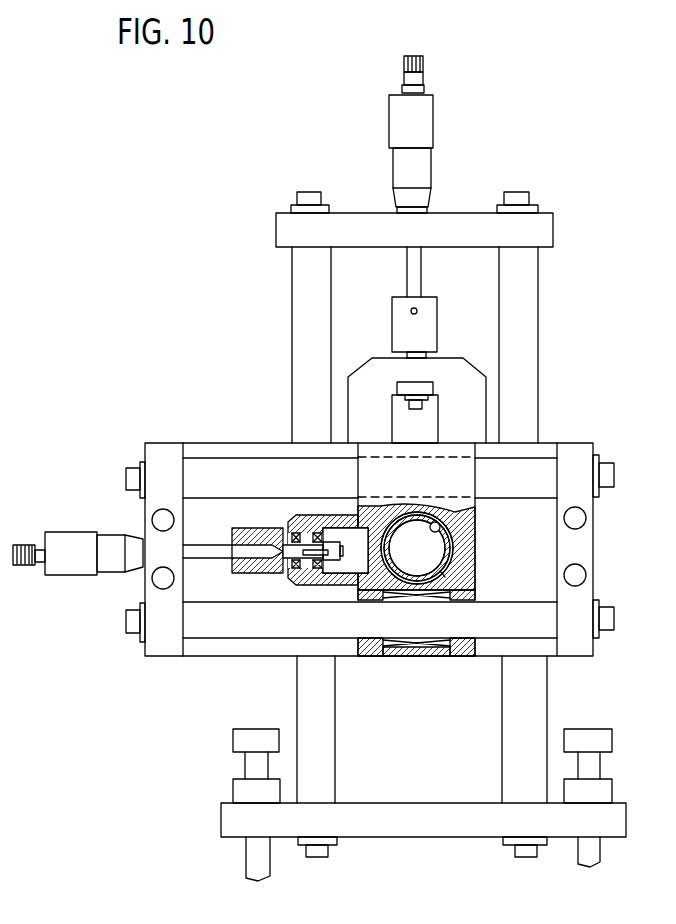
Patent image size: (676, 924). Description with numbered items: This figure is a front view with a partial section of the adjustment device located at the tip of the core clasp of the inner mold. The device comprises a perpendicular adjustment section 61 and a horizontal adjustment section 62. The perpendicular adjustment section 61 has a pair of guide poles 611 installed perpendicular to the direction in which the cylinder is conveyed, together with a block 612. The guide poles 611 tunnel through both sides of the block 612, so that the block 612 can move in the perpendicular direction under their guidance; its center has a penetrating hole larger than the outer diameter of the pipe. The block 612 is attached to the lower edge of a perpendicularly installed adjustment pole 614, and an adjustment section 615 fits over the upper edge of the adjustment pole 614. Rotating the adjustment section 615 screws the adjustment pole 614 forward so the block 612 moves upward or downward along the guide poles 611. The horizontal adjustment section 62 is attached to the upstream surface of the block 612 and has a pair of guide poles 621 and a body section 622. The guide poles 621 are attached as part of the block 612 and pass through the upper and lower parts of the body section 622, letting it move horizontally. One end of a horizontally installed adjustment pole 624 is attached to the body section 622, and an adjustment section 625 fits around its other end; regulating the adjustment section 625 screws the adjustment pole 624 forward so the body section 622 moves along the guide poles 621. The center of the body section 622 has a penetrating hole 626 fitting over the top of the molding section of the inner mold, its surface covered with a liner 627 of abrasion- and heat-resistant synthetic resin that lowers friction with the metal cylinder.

The perpendicular adjustment section 61 is at (548, 305).
The guide poles 611 is at (300, 283).
The block 612 is at (457, 367).
The adjustment pole 614 is at (418, 270).
The adjustment section 615 is at (422, 73).
The horizontal adjustment section 62 is at (195, 427).
The guide poles 621 is at (249, 472).
The body section 622 is at (472, 545).
The adjustment pole 624 is at (203, 547).
The adjustment section 625 is at (33, 563).
The penetrating hole 626 is at (447, 533).
The liner 627 is at (450, 572).